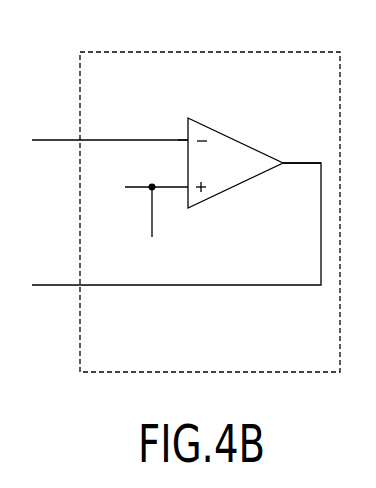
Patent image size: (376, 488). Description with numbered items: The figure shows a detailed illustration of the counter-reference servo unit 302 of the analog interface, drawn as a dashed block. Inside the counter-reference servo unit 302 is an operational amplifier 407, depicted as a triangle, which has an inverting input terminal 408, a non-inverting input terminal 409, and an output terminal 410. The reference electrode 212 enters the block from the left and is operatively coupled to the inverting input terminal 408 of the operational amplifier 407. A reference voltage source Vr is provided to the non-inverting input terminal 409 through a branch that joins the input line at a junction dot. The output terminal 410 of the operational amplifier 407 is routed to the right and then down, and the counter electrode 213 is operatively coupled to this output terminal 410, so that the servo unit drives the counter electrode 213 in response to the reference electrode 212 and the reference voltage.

The counter-reference servo unit 302 is at (182, 50).
The reference electrode 212 is at (50, 138).
The counter electrode 213 is at (50, 287).
The operational amplifier 407 is at (243, 182).
The inverting input terminal 408 is at (185, 139).
The non-inverting input terminal 409 is at (185, 189).
The output terminal 410 is at (285, 161).